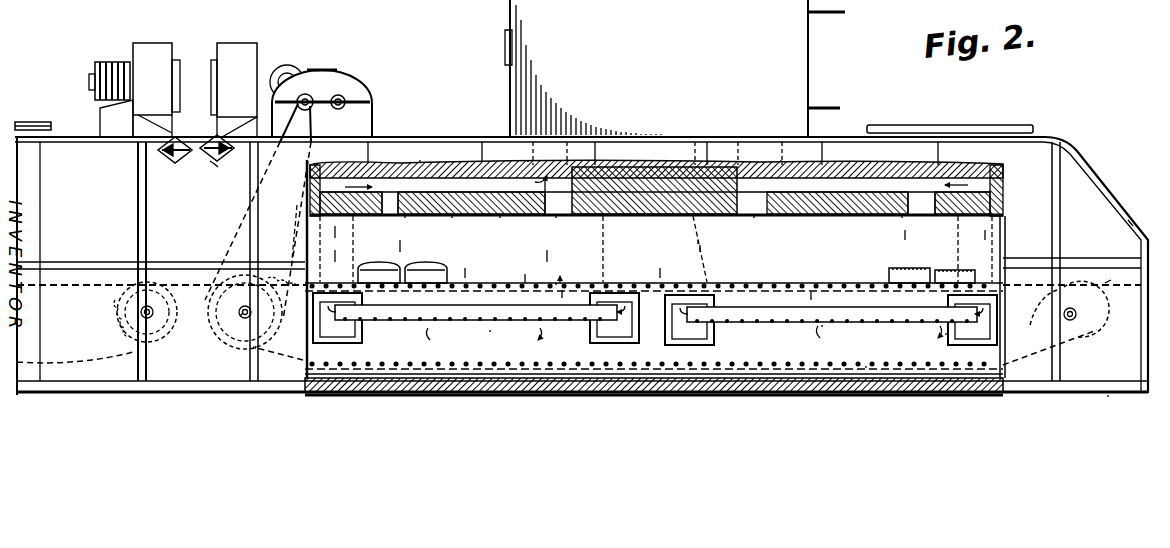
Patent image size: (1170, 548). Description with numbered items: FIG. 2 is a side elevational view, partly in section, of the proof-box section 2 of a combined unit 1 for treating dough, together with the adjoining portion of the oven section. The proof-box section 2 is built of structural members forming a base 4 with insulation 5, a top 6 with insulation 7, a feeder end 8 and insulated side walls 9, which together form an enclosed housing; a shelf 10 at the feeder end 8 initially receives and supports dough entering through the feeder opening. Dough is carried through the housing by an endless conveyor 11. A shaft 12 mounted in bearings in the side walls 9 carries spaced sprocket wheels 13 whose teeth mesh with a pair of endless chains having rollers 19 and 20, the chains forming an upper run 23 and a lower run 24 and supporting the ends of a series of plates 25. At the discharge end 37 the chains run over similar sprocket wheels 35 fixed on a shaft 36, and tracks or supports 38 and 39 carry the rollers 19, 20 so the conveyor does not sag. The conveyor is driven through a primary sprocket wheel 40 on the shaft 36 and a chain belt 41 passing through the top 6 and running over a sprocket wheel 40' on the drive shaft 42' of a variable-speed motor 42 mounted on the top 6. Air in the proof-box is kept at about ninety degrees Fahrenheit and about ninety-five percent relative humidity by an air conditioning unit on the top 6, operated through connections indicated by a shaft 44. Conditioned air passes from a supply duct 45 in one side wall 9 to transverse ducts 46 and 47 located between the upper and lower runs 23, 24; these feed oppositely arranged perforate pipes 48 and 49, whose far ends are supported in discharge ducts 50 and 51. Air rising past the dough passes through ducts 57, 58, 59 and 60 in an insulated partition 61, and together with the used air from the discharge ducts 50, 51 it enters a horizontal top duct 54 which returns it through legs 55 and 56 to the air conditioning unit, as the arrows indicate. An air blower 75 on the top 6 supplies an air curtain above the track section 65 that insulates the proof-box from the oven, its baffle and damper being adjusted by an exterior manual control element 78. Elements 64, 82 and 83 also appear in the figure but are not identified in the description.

The combined unit 1 is at (102, 137).
The proof-box section 2 is at (1074, 132).
The base 4 is at (1110, 396).
The insulation 5 is at (787, 400).
The top 6 is at (448, 137).
The insulation 7 is at (420, 158).
The feeder end 8 is at (1139, 224).
The side walls 9 is at (854, 152).
The shelf 10 is at (1111, 280).
The conveyor 11 is at (882, 282).
The shaft 12 is at (1078, 315).
The sprocket wheels 13 is at (1035, 319).
The roller 19 is at (762, 283).
The roller 20 is at (788, 283).
The upper run 23 is at (732, 282).
The lower run 24 is at (865, 366).
The plates 25 is at (490, 282).
The sprocket wheels 35 is at (255, 349).
The shaft 36 is at (243, 314).
The discharge end 37 is at (199, 137).
The track 38 is at (556, 282).
The track 39 is at (538, 364).
The primary sprocket wheel 40 is at (252, 245).
The sprocket wheel 40' is at (310, 93).
The chain belt 41 is at (281, 232).
The motor 42 is at (321, 95).
The drive shaft 42' is at (330, 111).
The shaft 44 is at (826, 6).
The supply duct 45 is at (698, 242).
The duct 46 is at (718, 338).
The duct 47 is at (644, 340).
The outlet perforate pipe 48 is at (824, 337).
The outlet perforate pipe 49 is at (490, 334).
The discharge duct 50 is at (942, 333).
The discharge duct 51 is at (362, 335).
The top duct 54 is at (452, 216).
The leg 55 is at (781, 156).
The leg 56 is at (528, 160).
The duct 57 is at (902, 216).
The duct 58 is at (754, 216).
The duct 59 is at (555, 217).
The duct 60 is at (405, 218).
The insulated partition 61 is at (500, 216).
The chain 64 is at (206, 307).
The track section 65 is at (186, 292).
The air blower 75 is at (258, 42).
The exterior manual control element 78 is at (224, 164).
The blower 82 is at (177, 44).
The rail end 83 is at (58, 134).